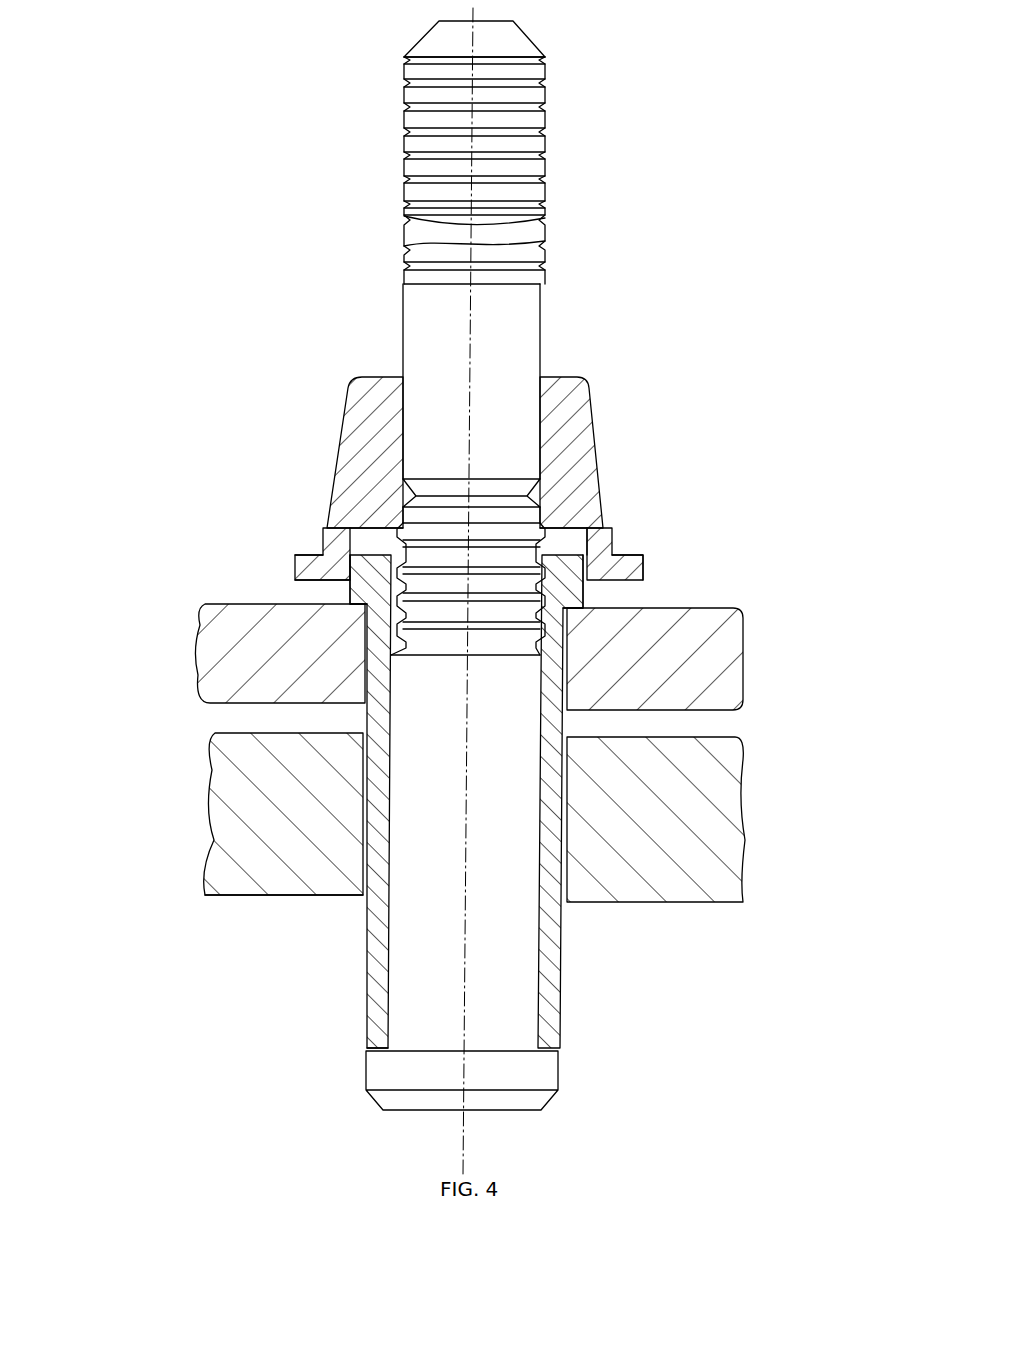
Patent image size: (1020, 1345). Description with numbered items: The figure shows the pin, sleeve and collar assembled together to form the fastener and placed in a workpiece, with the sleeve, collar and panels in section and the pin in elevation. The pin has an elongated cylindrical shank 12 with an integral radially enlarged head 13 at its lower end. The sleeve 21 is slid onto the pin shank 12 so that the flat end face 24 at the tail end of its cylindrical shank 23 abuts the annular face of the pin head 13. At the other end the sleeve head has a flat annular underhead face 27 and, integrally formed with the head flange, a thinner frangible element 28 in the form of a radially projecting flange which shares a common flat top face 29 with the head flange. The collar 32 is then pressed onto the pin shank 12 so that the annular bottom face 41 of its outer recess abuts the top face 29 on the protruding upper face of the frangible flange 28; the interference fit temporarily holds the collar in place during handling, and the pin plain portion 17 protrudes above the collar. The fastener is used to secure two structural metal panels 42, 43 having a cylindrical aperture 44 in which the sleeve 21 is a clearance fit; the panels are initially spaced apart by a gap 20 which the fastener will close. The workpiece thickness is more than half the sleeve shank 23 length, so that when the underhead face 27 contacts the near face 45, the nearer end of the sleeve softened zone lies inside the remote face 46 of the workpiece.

The shank 12 is at (540, 339).
The head 13 is at (544, 1072).
The plain portion 17 is at (528, 312).
The gap 20 is at (250, 718).
The sleeve 21 is at (590, 950).
The shank 23 is at (560, 818).
The end face 24 is at (378, 1047).
The underhead face 27 is at (567, 616).
The frangible element 28 is at (602, 572).
The top face 29 is at (568, 556).
The collar 32 is at (603, 465).
The annular bottom face 41 is at (328, 528).
The structural metal panel 42 is at (213, 652).
The structural metal panel 43 is at (228, 780).
The cylindrical aperture 44 is at (332, 604).
The near face 45 is at (300, 556).
The remote face 46 is at (238, 900).